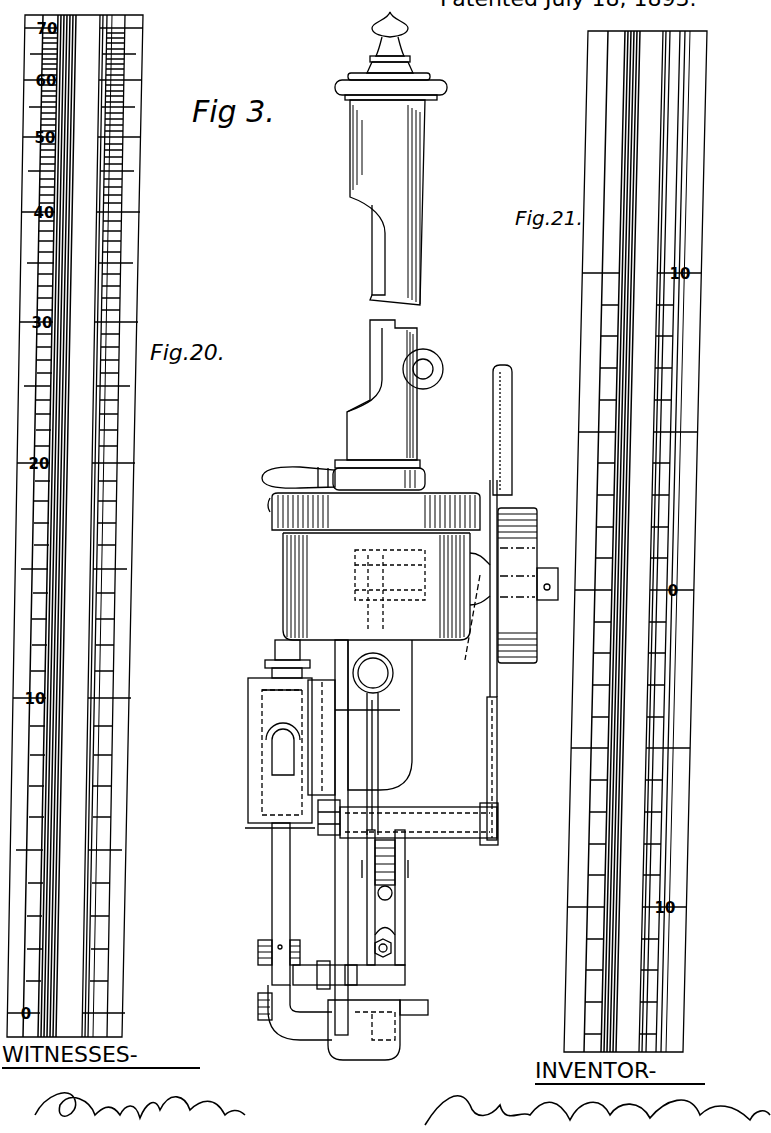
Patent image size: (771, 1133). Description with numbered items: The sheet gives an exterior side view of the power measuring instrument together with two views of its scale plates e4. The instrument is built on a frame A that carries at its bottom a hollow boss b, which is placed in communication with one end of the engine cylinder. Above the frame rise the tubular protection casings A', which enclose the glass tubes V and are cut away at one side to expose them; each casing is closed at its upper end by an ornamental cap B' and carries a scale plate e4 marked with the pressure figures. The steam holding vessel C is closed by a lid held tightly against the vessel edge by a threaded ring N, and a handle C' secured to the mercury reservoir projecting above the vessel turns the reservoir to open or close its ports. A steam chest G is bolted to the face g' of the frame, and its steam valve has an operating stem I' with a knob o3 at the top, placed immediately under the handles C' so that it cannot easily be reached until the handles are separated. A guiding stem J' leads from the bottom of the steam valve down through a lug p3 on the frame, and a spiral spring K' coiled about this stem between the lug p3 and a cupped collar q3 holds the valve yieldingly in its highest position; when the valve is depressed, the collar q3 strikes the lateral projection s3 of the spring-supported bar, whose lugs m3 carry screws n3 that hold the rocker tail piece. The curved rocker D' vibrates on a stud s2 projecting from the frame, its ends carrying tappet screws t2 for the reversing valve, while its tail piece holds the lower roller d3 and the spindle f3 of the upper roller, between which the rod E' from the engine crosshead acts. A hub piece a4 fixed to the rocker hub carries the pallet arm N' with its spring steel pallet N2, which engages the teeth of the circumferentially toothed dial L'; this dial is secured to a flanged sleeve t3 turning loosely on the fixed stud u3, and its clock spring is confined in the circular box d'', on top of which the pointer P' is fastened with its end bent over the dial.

In FIG. 20, the scale plate e4 is at (133, 449).
In FIG. 21, the scale plate e4 is at (700, 497).
In FIG. 3, the ornamental cap B' is at (405, 56).
In FIG. 3, the tubular protection casing A' is at (402, 202).
In FIG. 3, the glass tube V is at (380, 390).
In FIG. 3, the pointer P' is at (515, 531).
In FIG. 3, the circumferentially toothed dial L' is at (485, 431).
In FIG. 3, the handle C' is at (298, 464).
In FIG. 3, the threaded ring N is at (376, 513).
In FIG. 3, the knob o3 is at (270, 500).
In FIG. 3, the steam holding vessel C is at (376, 586).
In FIG. 3, the fixed stud u3 is at (395, 593).
In FIG. 3, the circular box d'' is at (514, 585).
In FIG. 3, the operating stem I' is at (279, 649).
In FIG. 3, the steam chest G is at (268, 753).
In FIG. 3, the face g' is at (263, 691).
In FIG. 3, the frame A is at (327, 837).
In FIG. 3, the curved rocker D' is at (389, 737).
In FIG. 3, the screw t2 is at (395, 670).
In FIG. 3, the flanged sleeve t3 is at (474, 632).
In FIG. 3, the spring steel pallet N2 is at (499, 700).
In FIG. 3, the pallet arm N' is at (438, 812).
In FIG. 3, the hub piece a4 is at (495, 837).
In FIG. 3, the rod E' is at (404, 907).
In FIG. 3, the stud s2 is at (398, 853).
In FIG. 3, the spindle f3 is at (408, 875).
In FIG. 3, the lower roller d3 is at (392, 896).
In FIG. 3, the screw n3 is at (398, 938).
In FIG. 3, the lug m3 is at (400, 958).
In FIG. 3, the guiding stem J' is at (265, 904).
In FIG. 3, the cupped collar q3 is at (266, 951).
In FIG. 3, the spiral spring K' is at (270, 1004).
In FIG. 3, the lug p3 is at (254, 1002).
In FIG. 3, the lateral projection s3 is at (318, 946).
In FIG. 3, the hollow boss b is at (378, 1045).